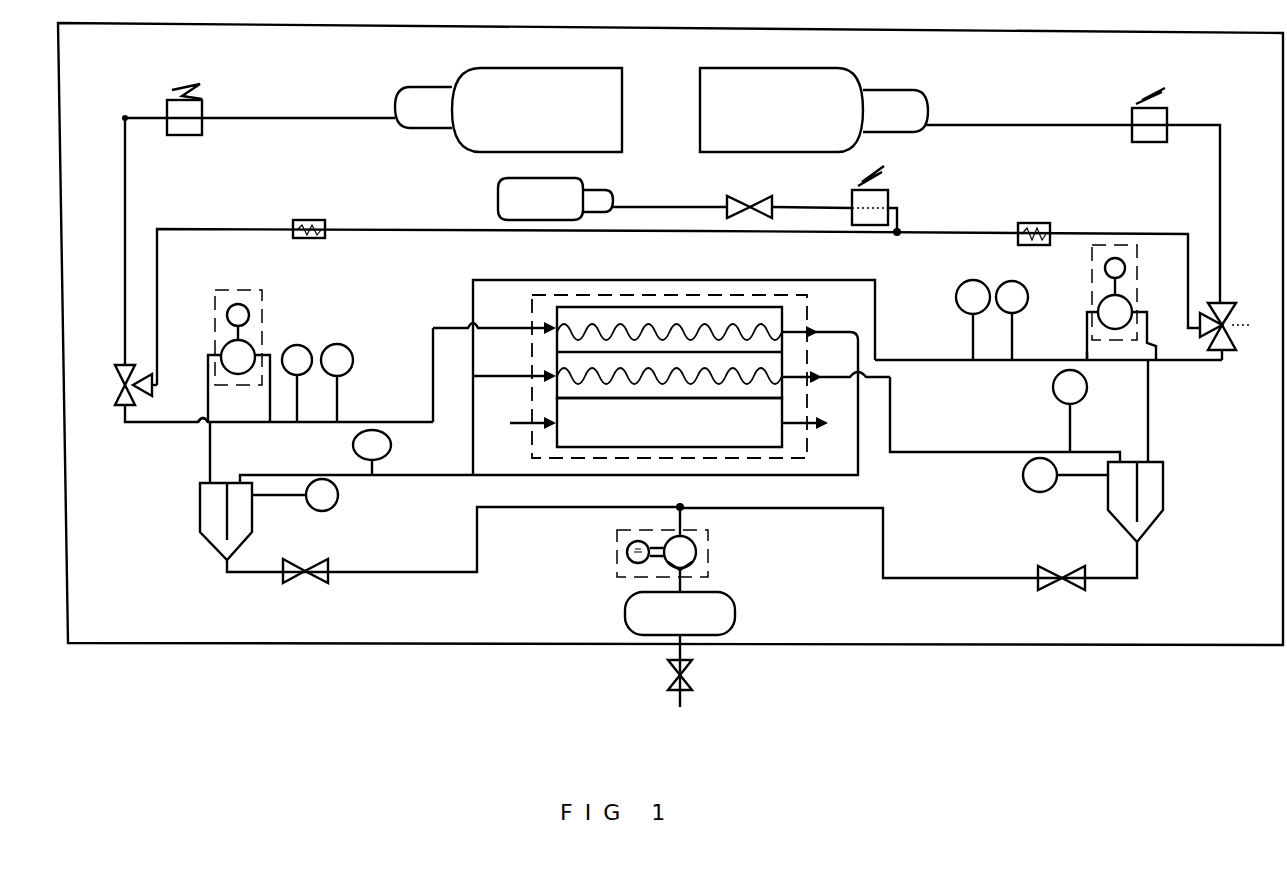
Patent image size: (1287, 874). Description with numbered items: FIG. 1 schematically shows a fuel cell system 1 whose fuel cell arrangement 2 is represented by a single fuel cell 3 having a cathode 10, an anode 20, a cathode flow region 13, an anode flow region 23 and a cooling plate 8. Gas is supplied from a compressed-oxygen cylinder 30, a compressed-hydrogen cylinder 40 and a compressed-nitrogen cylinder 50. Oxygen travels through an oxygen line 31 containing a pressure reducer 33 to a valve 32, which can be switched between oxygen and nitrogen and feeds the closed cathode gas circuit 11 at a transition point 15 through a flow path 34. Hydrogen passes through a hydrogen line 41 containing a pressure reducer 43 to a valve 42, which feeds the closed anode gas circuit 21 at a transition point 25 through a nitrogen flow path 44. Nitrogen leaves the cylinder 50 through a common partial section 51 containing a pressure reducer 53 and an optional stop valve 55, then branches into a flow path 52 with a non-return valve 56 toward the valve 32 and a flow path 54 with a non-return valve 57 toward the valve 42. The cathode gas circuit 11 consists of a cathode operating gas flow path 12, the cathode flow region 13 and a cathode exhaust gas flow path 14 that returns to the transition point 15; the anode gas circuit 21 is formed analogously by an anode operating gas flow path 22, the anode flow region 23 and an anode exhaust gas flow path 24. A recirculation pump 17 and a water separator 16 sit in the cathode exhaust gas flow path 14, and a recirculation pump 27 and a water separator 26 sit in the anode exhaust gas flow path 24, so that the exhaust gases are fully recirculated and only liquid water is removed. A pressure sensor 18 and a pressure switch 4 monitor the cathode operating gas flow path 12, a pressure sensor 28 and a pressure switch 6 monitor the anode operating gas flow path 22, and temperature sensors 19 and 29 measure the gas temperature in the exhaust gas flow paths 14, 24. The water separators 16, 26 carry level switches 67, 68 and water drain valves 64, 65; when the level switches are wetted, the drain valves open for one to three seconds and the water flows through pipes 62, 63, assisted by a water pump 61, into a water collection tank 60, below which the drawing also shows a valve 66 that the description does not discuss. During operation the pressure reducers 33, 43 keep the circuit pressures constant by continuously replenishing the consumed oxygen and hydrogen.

The fuel cell system 1 is at (1048, 12).
The fuel cell arrangement 2 is at (678, 300).
The fuel cell 3 is at (765, 302).
The pressure switch 4 is at (1012, 320).
The pressure switch 6 is at (297, 383).
The cooling plate 8 is at (545, 442).
The cathode 10 is at (548, 392).
The cathode gas circuit 11 is at (900, 352).
The cathode operating gas flow path 12 is at (948, 362).
The cathode flow region 13 is at (780, 380).
The cathode exhaust gas flow path 14 is at (952, 456).
The transition point 15 is at (1090, 365).
The water separator 16 is at (1165, 530).
The recirculation pump 17 is at (1132, 302).
The pressure sensor 18 is at (973, 320).
The temperature sensor 19 is at (1070, 411).
The anode 20 is at (552, 322).
The anode gas circuit 21 is at (425, 332).
The anode operating gas flow path 22 is at (406, 420).
The anode flow region 23 is at (780, 330).
The anode exhaust gas flow path 24 is at (212, 445).
The transition point 25 is at (268, 420).
The water separator 26 is at (198, 538).
The recirculation pump 27 is at (228, 345).
The pressure sensor 28 is at (337, 383).
The temperature sensor 29 is at (372, 452).
The compressed-oxygen cylinder 30 is at (814, 110).
The oxygen flow path 31 is at (1034, 123).
The valve 32 is at (1232, 305).
The pressure reducer 33 is at (1172, 106).
The flow path 34 is at (1226, 362).
The compressed-hydrogen cylinder 40 is at (508, 110).
The hydrogen flow path 41 is at (300, 116).
The valve 42 is at (118, 366).
The pressure reducer 43 is at (170, 95).
The nitrogen flow path 44 is at (178, 424).
The compressed-nitrogen cylinder 50 is at (555, 199).
The inert gas flow path partial section 51 is at (658, 205).
The inert gas flow path 52 is at (966, 232).
The pressure reducer 53 is at (892, 190).
The inert gas flow path 54 is at (391, 228).
The stop valve 55 is at (735, 200).
The non-return valve 56 is at (1048, 224).
The non-return valve 57 is at (291, 218).
The water collection tank 60 is at (680, 613).
The water pump 61 is at (608, 555).
The line 62 is at (927, 582).
The pipe 63 is at (434, 578).
The water drain valve 64 is at (1040, 566).
The water drain valve 65 is at (330, 566).
The valve 66 is at (695, 672).
The level switch 67 is at (1065, 475).
The level switch 68 is at (295, 495).